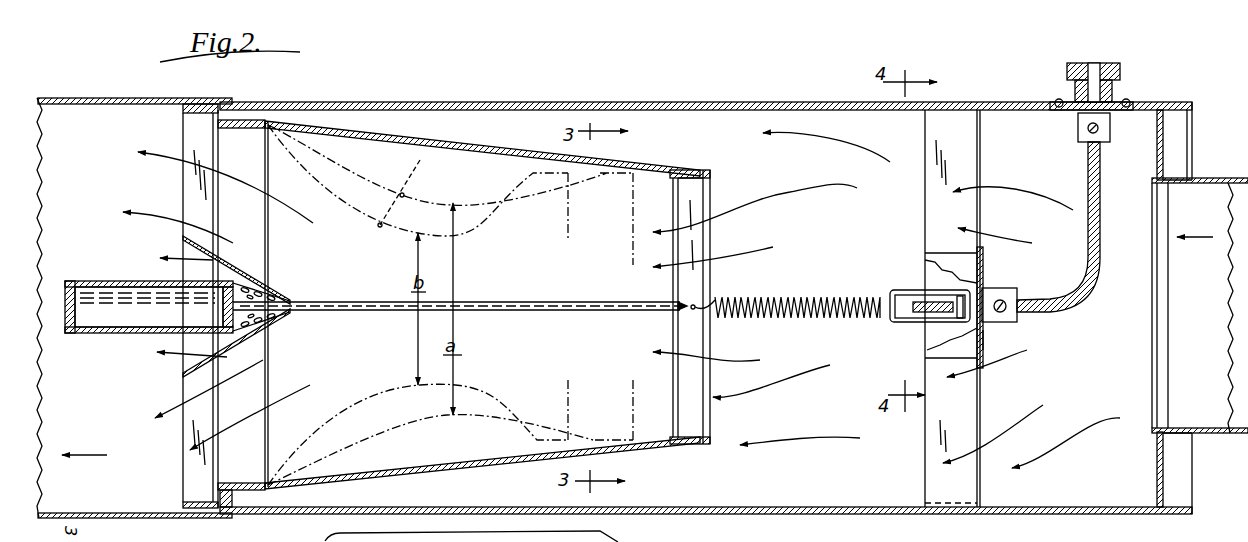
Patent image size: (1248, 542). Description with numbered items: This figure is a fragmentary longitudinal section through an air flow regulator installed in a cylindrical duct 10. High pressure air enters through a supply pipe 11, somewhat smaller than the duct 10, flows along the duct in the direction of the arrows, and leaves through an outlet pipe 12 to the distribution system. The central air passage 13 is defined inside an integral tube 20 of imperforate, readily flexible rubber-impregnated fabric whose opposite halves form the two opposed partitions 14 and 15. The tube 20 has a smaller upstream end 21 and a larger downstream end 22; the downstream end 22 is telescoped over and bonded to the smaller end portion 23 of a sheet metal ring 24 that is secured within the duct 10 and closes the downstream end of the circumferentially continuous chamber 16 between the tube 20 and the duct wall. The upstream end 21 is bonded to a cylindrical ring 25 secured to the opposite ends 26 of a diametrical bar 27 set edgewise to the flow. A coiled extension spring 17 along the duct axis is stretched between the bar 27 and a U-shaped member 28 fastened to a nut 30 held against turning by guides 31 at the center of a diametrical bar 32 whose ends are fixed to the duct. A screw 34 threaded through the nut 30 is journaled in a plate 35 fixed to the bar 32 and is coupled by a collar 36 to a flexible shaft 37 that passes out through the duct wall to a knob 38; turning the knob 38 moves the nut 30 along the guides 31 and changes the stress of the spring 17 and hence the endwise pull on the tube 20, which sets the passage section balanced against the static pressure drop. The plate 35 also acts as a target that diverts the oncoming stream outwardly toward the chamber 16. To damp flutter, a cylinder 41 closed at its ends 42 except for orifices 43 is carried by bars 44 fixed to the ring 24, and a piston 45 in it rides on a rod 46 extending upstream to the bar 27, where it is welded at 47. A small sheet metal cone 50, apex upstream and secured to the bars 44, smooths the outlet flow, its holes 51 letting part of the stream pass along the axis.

The duct 10 is at (478, 101).
The supply pipe 11 is at (1212, 177).
The outlet pipe 12 is at (88, 97).
The air passage 13 is at (453, 273).
The partition 14 is at (420, 158).
The partition 15 is at (435, 468).
The chamber 16 is at (500, 136).
The spring 17 is at (778, 313).
The tube 20 is at (628, 163).
The upstream end 21 is at (697, 443).
The downstream end 22 is at (240, 497).
The smaller end portion 23 is at (253, 482).
The sheet metal ring 24 is at (203, 500).
The cylindrical ring 25 is at (695, 436).
The opposite ends 26 is at (690, 178).
The bar 27 is at (683, 248).
The U-shaped member 28 is at (900, 292).
The nut 30 is at (960, 318).
The guides 31 is at (967, 263).
The bar 32 is at (968, 395).
The screw 34 is at (893, 306).
The plate 35 is at (983, 340).
The collar 36 is at (1013, 292).
The flexible shaft 37 is at (1090, 168).
The knob 38 is at (1118, 72).
The cylinder 41 is at (113, 333).
The ends 42 is at (67, 300).
The orifices 43 is at (67, 320).
The bars 44 is at (192, 183).
The piston 45 is at (220, 307).
The rod 46 is at (492, 311).
The weld 47 is at (682, 312).
The cone 50 is at (283, 292).
The holes 51 is at (262, 330).